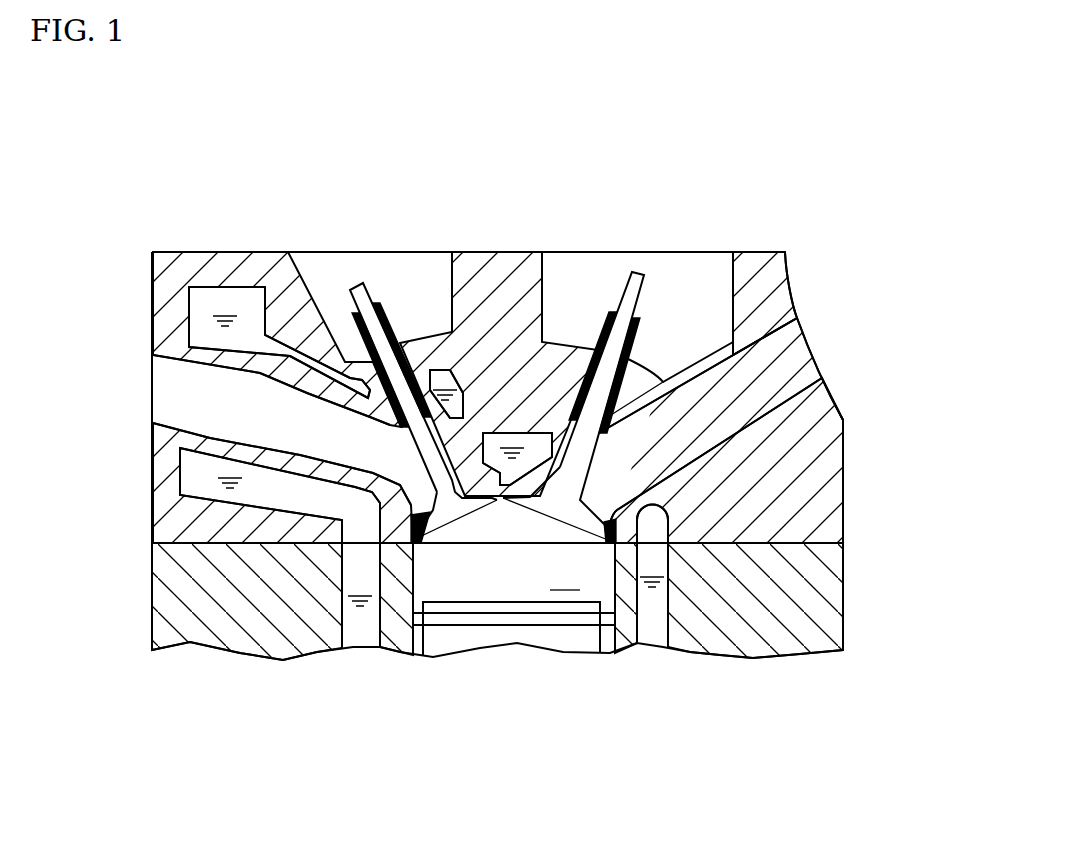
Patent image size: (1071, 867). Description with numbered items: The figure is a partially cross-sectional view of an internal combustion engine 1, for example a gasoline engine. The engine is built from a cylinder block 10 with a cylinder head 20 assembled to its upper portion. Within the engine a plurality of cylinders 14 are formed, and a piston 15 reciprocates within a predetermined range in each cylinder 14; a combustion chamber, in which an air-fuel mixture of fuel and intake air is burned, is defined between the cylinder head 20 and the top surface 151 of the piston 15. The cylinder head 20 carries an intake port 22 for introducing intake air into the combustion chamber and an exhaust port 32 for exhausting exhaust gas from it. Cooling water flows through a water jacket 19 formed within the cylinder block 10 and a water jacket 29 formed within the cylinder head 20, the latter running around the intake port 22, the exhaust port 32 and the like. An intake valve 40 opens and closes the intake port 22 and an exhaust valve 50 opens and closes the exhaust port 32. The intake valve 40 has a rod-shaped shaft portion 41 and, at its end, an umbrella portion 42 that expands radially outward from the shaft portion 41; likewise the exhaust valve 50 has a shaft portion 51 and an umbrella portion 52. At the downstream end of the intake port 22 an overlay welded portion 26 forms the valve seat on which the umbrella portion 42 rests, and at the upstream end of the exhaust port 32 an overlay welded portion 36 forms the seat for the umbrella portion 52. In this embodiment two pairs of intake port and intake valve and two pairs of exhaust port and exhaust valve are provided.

The internal combustion engine 1 is at (834, 215).
The cylinder block 10 is at (838, 625).
The cylinder 14 is at (612, 545).
The piston 15 is at (563, 645).
The top surface 151 is at (480, 604).
The water jacket 19 is at (360, 632).
The cylinder head 20 is at (838, 452).
The intake port 22 is at (832, 388).
The overlay welded portion 26 is at (600, 545).
The water jacket 29 is at (221, 297).
The exhaust port 32 is at (210, 437).
The overlay welded portion 36 is at (413, 545).
The intake valve 40 is at (638, 270).
The shaft portion 41 is at (636, 347).
The umbrella portion 42 is at (588, 510).
The exhaust valve 50 is at (356, 286).
The shaft portion 51 is at (388, 372).
The umbrella portion 52 is at (437, 505).